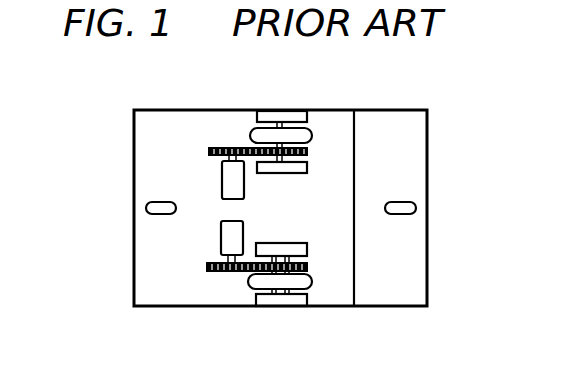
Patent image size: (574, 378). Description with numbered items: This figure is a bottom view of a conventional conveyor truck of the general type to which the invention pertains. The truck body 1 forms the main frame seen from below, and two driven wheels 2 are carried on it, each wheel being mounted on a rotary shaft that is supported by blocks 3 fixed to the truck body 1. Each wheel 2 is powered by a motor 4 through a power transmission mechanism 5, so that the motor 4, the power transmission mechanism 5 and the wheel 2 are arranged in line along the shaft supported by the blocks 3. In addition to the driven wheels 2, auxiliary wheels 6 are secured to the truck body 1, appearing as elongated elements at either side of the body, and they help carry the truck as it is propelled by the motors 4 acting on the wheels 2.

The truck body 1 is at (413, 133).
The wheels 2 is at (311, 130).
The blocks 3 is at (278, 110).
The motor 4 is at (222, 167).
The power transmission mechanism 5 is at (229, 147).
The auxiliary wheels 6 is at (152, 203).